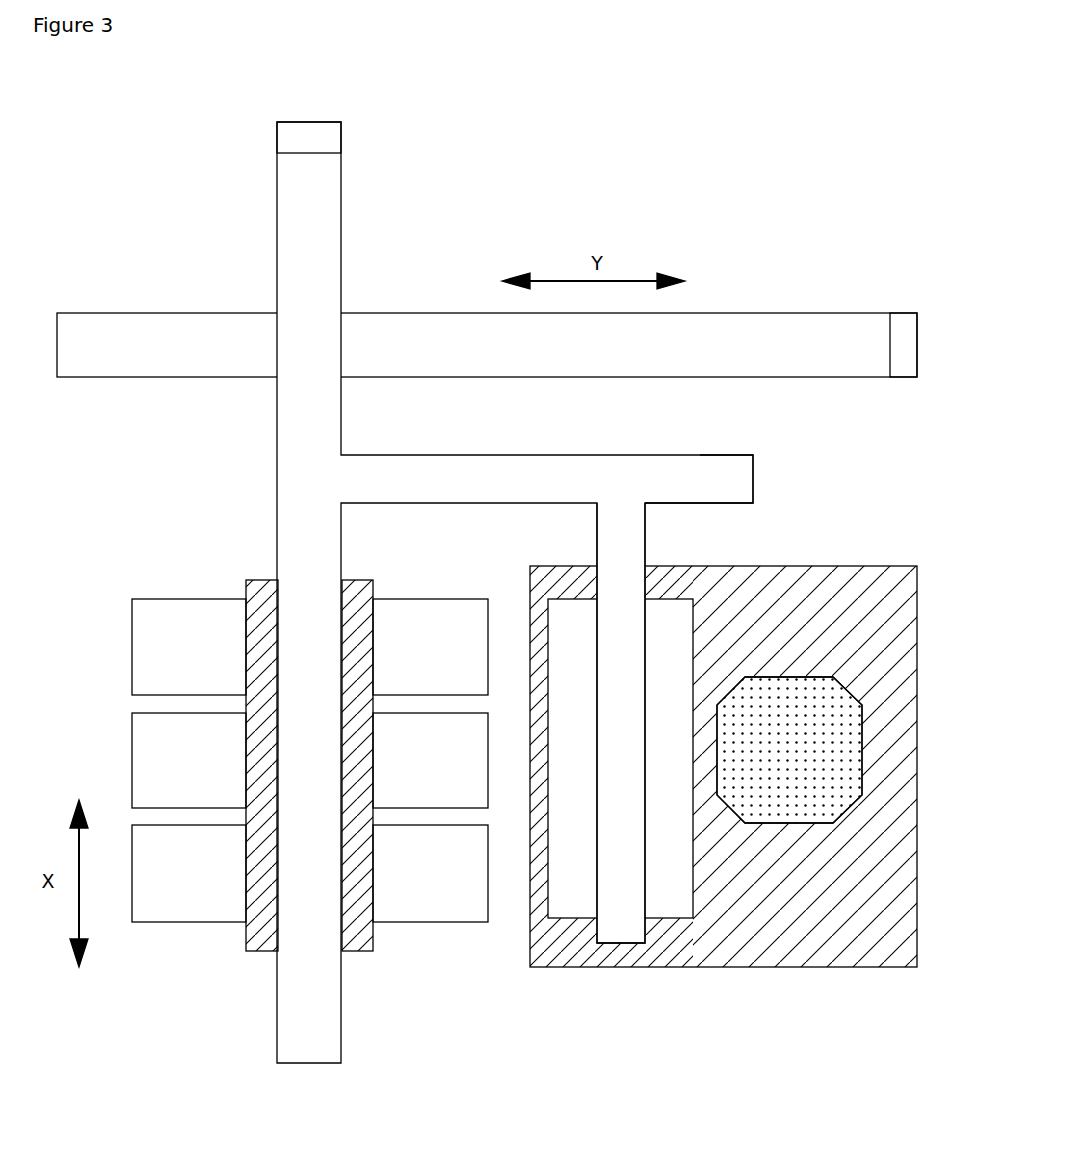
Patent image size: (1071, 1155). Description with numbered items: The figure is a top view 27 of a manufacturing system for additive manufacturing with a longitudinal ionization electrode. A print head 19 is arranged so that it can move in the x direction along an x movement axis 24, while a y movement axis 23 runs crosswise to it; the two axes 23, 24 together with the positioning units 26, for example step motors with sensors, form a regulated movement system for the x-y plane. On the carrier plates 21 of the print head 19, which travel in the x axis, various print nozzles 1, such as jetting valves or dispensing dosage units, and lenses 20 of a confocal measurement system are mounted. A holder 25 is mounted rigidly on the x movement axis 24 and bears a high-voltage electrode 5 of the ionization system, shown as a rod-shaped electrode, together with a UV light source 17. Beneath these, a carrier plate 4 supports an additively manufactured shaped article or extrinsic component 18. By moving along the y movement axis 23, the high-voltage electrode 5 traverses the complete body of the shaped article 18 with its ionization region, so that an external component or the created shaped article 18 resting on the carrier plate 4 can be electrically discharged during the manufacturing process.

The print nozzle 1 is at (445, 641).
The carrier plate 4 is at (855, 953).
The high-voltage electrode 5 is at (577, 893).
The UV light source 17 is at (670, 893).
The shaped article 18 is at (747, 795).
The print head 19 is at (474, 570).
The confocal lenses 20 is at (168, 628).
The carrier plate movement carriage 21 is at (270, 933).
The y movement axis 23 is at (540, 358).
The x movement axis 24 is at (300, 518).
The holder 25 is at (735, 472).
The positioning unit 26 is at (318, 137).
The top view of manufacturing system 27 is at (772, 220).